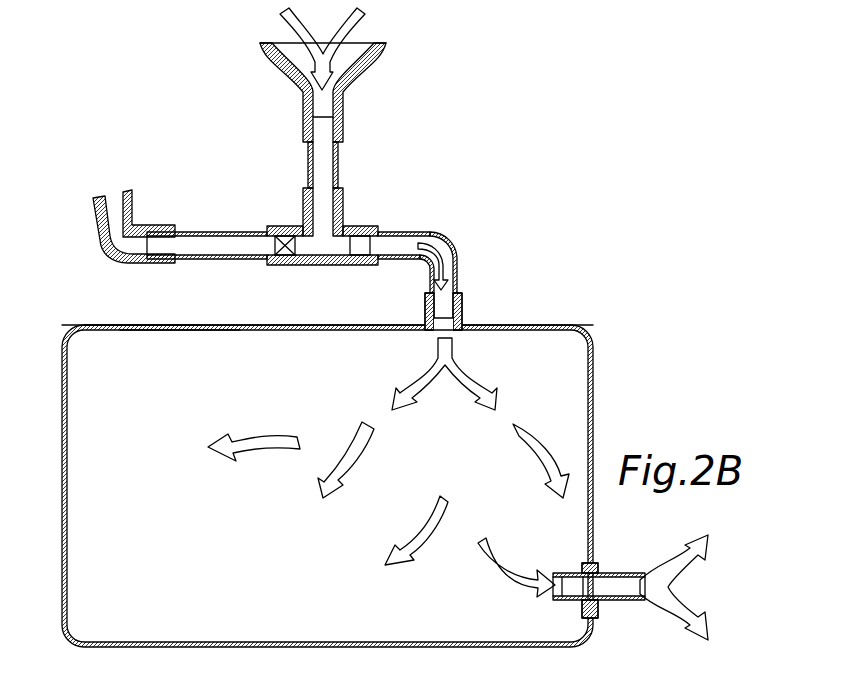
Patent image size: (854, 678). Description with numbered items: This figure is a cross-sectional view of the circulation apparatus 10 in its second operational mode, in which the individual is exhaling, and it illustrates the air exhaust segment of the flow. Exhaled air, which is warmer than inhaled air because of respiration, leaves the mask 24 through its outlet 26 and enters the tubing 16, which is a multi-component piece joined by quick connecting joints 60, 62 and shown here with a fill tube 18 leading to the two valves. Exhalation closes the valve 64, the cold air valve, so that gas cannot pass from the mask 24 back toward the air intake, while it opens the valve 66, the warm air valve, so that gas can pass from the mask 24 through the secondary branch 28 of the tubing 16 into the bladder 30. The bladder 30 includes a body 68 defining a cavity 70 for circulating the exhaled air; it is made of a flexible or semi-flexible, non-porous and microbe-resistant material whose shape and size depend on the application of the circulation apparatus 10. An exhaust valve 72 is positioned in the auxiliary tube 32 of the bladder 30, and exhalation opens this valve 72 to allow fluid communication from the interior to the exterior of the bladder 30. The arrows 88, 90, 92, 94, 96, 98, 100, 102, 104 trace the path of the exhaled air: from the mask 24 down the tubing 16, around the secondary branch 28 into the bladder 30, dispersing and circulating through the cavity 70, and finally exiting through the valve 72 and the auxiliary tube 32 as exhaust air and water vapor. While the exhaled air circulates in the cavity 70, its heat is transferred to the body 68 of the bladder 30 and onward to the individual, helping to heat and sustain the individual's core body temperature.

The circulation apparatus 10 is at (514, 176).
The tubing 16 is at (228, 230).
The fill tube 18 is at (209, 261).
The mask 24 is at (374, 73).
The funnel outlet 26 is at (318, 117).
The secondary branch 28 is at (443, 238).
The bladder 30 is at (591, 329).
The auxiliary tube 32 is at (614, 603).
The quick connecting joint 60 is at (104, 246).
The quick connecting joint 62 is at (341, 206).
The cold air valve 64 is at (281, 252).
The warm air valve 66 is at (372, 247).
The body 68 is at (118, 324).
The cavity 70 is at (148, 332).
The exhaust valve 72 is at (570, 580).
The arrow 88 is at (363, 30).
The arrow 90 is at (456, 252).
The arrow 92 is at (457, 373).
The arrow 94 is at (252, 462).
The arrow 96 is at (360, 427).
The arrow 98 is at (428, 526).
The arrow 100 is at (521, 440).
The arrow 102 is at (513, 580).
The arrow 104 is at (690, 565).